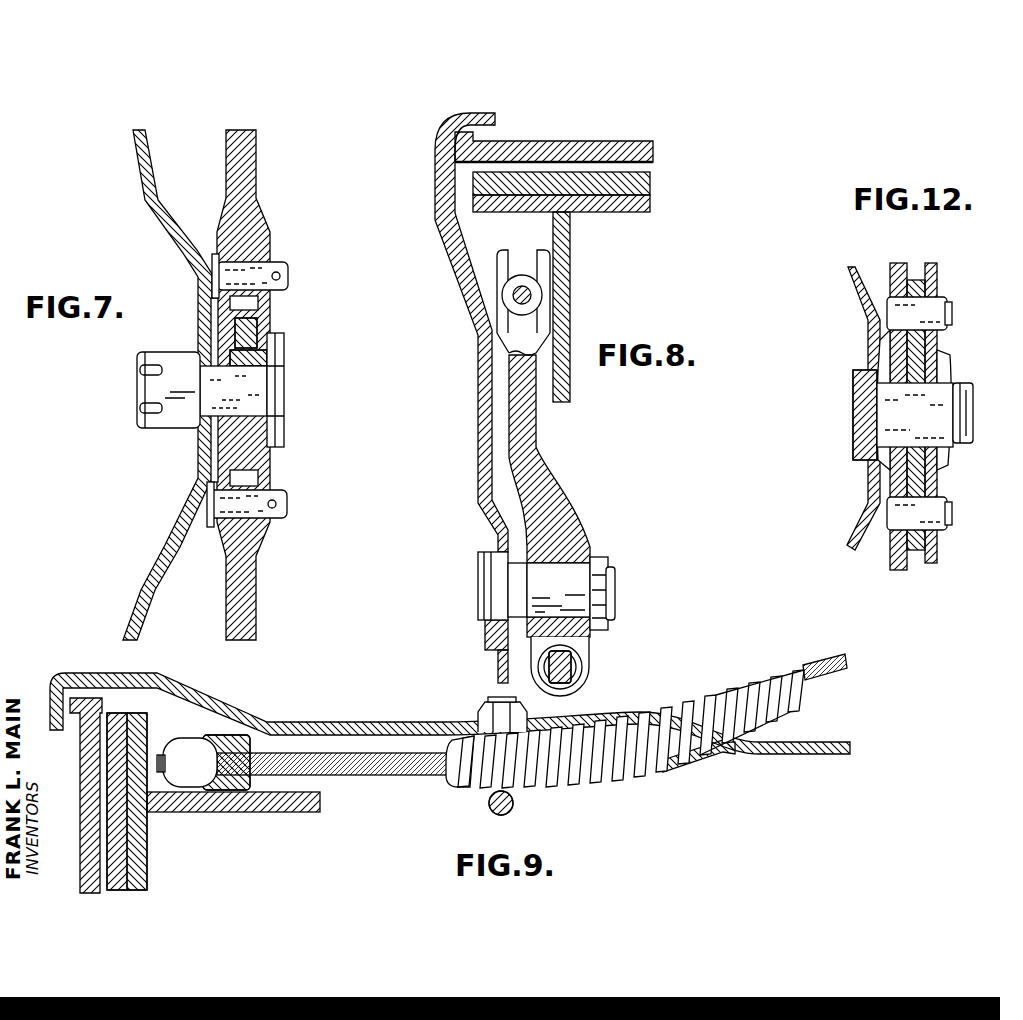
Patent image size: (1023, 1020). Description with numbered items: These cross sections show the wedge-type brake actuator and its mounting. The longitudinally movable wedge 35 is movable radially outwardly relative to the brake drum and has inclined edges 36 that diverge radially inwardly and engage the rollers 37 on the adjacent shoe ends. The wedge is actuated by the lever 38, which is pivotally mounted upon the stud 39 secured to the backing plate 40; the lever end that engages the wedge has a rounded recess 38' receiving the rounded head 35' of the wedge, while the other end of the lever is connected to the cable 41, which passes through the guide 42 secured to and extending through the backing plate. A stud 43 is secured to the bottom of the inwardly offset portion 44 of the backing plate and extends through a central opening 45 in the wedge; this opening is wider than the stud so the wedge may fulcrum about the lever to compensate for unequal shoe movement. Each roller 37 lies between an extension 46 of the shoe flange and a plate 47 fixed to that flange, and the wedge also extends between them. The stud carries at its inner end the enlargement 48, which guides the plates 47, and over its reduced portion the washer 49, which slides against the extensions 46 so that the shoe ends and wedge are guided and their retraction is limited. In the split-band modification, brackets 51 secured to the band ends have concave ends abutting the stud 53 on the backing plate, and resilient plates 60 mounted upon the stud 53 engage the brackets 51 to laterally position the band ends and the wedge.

In FIG. 7, the longitudinally movable wedge 35 is at (288, 320).
In FIG. 8, the rounded head 35' is at (581, 666).
In FIG. 7, the inclined edges 36 is at (230, 308).
In FIG. 7, the rollers 37 is at (250, 248).
In FIG. 8, the lever 38 is at (543, 443).
In FIG. 8, the rounded recess 38' is at (597, 661).
In FIG. 8, the stud 39 is at (557, 580).
In FIG. 7, the backing plate 40 is at (170, 540).
In FIG. 8, the backing plate 40 is at (483, 440).
In FIG. 9, the backing plate 40 is at (333, 720).
In FIG. 8, the cable 41 is at (530, 293).
In FIG. 9, the cable 41 is at (372, 767).
In FIG. 8, the guide 42 is at (522, 284).
In FIG. 9, the guide 42 is at (570, 777).
In FIG. 7, the stud 43 is at (252, 388).
In FIG. 7, the inwardly offset portion 44 is at (211, 447).
In FIG. 8, the inwardly offset portion 44 is at (498, 667).
In FIG. 7, the central opening 45 is at (247, 365).
In FIG. 7, the extension 46 is at (268, 302).
In FIG. 7, the plate 47 is at (226, 252).
In FIG. 7, the enlargement 48 is at (284, 433).
In FIG. 7, the washer 49 is at (212, 345).
In FIG. 12, the brackets 51 is at (928, 263).
In FIG. 12, the stud 53 is at (910, 388).
In FIG. 12, the resilient plates 60 is at (883, 470).